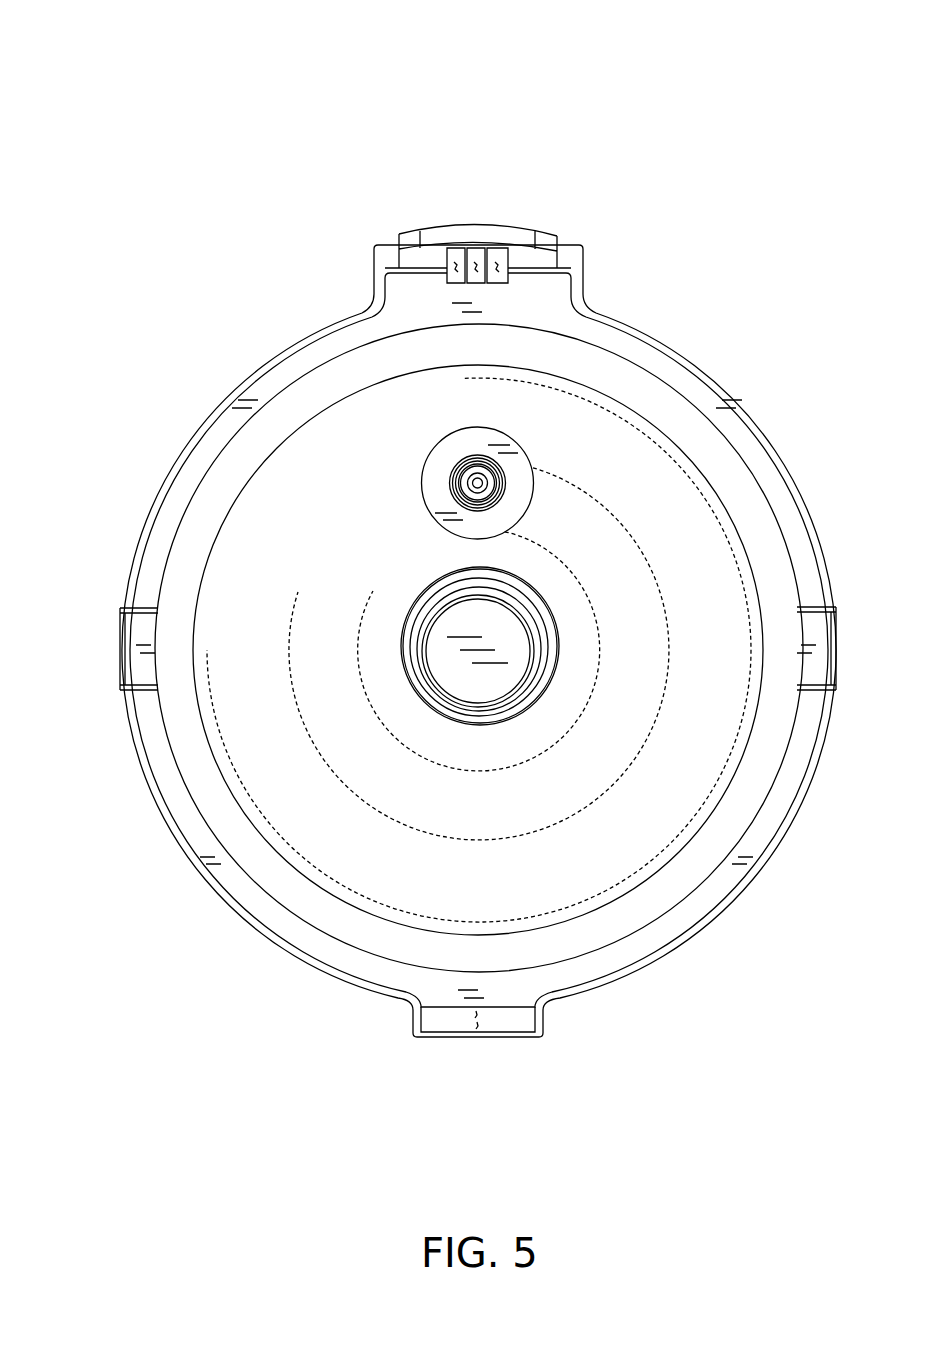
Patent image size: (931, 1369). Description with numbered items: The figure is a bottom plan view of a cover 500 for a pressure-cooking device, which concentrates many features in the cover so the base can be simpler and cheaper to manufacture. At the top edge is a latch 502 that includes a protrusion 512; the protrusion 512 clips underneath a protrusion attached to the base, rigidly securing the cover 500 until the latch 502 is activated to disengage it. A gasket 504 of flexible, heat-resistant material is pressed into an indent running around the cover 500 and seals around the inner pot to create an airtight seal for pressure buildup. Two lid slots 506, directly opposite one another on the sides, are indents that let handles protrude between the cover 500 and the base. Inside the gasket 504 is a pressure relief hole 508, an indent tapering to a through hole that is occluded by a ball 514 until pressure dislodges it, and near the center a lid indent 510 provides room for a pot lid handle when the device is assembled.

The cover 500 is at (180, 80).
The latch 502 is at (473, 213).
The gasket 504 is at (247, 405).
The lid slots 506 is at (137, 607).
The pressure relief hole 508 is at (413, 440).
The lid indent 510 is at (390, 590).
The protrusion 512 is at (447, 257).
The ball 514 is at (469, 458).